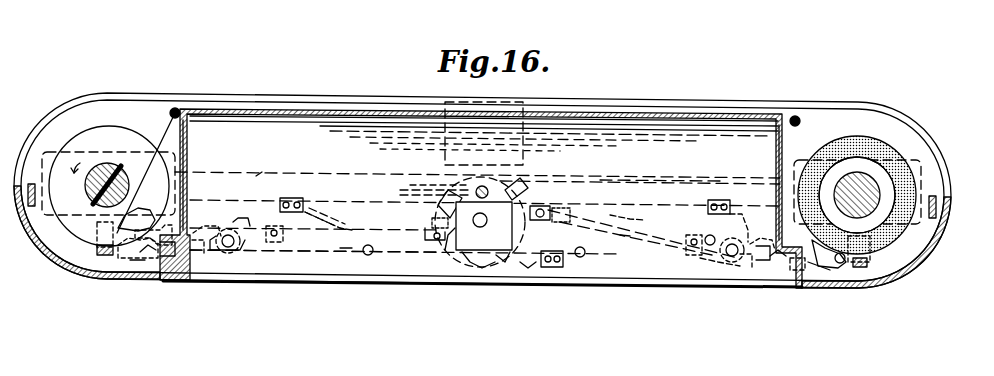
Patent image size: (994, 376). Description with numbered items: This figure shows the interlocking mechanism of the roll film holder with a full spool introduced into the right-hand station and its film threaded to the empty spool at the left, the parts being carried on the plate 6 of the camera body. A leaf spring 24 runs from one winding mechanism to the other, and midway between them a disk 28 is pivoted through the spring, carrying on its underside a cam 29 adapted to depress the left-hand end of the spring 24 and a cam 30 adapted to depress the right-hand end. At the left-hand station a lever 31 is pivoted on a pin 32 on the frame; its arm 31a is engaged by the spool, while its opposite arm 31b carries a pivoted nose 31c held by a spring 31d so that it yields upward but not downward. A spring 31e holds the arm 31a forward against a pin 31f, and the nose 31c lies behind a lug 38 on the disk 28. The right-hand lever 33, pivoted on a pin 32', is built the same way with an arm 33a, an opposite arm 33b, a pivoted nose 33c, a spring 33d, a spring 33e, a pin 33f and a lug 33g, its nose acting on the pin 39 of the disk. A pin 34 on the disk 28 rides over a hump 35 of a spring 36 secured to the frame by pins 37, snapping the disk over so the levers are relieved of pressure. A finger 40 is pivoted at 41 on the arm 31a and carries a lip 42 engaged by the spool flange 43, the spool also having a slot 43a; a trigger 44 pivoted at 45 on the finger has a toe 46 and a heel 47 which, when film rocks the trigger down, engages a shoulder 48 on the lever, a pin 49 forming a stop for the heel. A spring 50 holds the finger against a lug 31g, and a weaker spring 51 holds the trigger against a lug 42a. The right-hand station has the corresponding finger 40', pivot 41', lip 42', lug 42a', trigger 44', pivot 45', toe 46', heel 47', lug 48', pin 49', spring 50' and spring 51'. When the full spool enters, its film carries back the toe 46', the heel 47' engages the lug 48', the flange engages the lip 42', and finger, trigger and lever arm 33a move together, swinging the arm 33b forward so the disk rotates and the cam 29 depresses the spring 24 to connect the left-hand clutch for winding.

The plate 6 is at (143, 100).
The leaf spring 24 is at (620, 190).
The disk 28 is at (442, 262).
The cam 29 is at (445, 205).
The cam 30 is at (512, 190).
The lever 31 is at (300, 256).
The lever arm 31a is at (256, 178).
The lever arm 31b is at (344, 258).
The pivoted nose 31c is at (432, 258).
The spring 31d is at (430, 222).
The spring 31e is at (318, 212).
The pin 31f is at (372, 256).
The lug 31g is at (238, 218).
The pin 32 is at (281, 195).
The pin 32' is at (712, 198).
The lever 33 is at (650, 248).
The lever arm 33a is at (692, 262).
The lever arm 33b is at (620, 242).
The pivoted nose 33c is at (555, 222).
The spring 33d is at (550, 210).
The spring 33e is at (650, 205).
The pin 33f is at (580, 258).
The lug 33g is at (738, 214).
The pin 34 is at (496, 266).
The hump 35 is at (478, 266).
The spring 36 is at (523, 270).
The pins 37 is at (554, 268).
The lug 38 is at (425, 190).
The pin 39 is at (540, 200).
The finger 40 is at (133, 275).
The finger 40' is at (882, 278).
The pivot 41 is at (227, 271).
The pivot 41' is at (724, 235).
The lip 42 is at (89, 264).
The lip 42' is at (891, 282).
The lug 42a is at (153, 214).
The lug 42a' is at (792, 294).
The flange 43 is at (85, 130).
The slot 43a is at (107, 165).
The trigger 44 is at (150, 277).
The trigger 44' is at (770, 285).
The pivot 45 is at (197, 175).
The pivot 45' is at (762, 182).
The toe 46 is at (136, 198).
The toe 46' is at (849, 285).
The heel 47 is at (182, 275).
The heel 47' is at (753, 289).
The shoulder 48 is at (205, 282).
The lug 48' is at (738, 286).
The pin 49 is at (207, 207).
The pin 49' is at (762, 228).
The spring 50 is at (267, 272).
The spring 50' is at (718, 290).
The spring 51 is at (135, 292).
The spring 51' is at (835, 291).